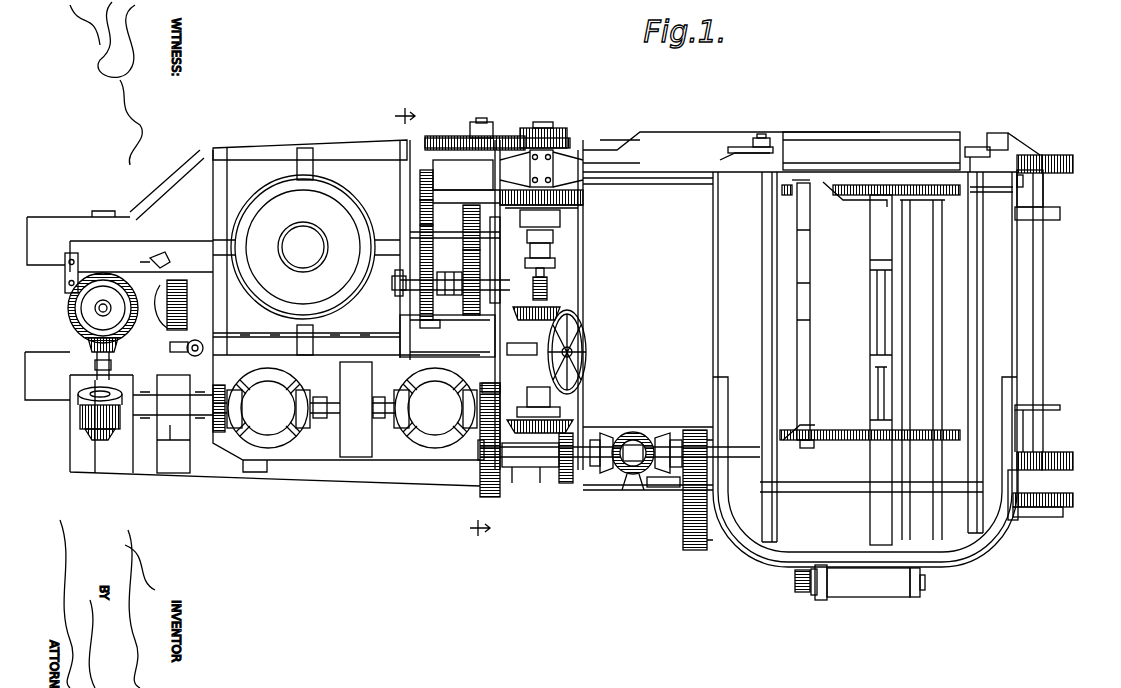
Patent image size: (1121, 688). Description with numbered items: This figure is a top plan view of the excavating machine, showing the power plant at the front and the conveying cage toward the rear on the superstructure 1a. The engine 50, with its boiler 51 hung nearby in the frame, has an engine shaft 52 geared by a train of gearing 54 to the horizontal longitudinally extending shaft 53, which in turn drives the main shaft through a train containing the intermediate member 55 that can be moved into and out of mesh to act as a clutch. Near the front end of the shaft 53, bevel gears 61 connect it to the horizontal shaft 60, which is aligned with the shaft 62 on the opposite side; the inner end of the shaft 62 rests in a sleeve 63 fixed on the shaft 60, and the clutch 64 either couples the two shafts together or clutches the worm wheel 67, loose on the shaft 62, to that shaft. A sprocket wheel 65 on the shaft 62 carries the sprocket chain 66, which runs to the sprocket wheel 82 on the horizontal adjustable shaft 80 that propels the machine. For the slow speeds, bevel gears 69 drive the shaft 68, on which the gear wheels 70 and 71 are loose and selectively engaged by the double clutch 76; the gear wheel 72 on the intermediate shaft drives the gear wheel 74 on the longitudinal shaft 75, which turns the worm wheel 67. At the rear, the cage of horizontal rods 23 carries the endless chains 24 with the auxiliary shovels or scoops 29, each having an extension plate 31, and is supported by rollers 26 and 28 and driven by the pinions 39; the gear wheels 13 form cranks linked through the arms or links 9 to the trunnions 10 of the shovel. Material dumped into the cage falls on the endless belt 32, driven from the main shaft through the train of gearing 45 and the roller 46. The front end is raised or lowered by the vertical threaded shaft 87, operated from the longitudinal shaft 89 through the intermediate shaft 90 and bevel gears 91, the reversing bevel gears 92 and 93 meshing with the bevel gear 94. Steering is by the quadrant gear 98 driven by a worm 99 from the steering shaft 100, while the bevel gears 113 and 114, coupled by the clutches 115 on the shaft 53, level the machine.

The superstructure 1a is at (713, 286).
The arms or links 9 is at (430, 328).
The trunnions 10 is at (433, 268).
The gear wheels 13 is at (463, 226).
The horizontal rods 23 is at (935, 264).
The endless chains 24 is at (855, 183).
The rollers 26 is at (740, 148).
The roller 28 is at (983, 146).
The auxiliary shovels or scoops 29 is at (837, 362).
The extension plate 31 is at (1073, 500).
The endless belt 32 is at (860, 590).
The pinions 39 is at (1035, 154).
The train of gearing 45 is at (793, 575).
The roller 46 is at (814, 596).
The engine 50 is at (345, 409).
The boiler 51 is at (306, 251).
The engine shaft 52 is at (508, 420).
The horizontal longitudinally extending shaft 53 is at (478, 452).
The train of gearing 54 is at (486, 383).
The intermediate member 55 is at (688, 486).
The horizontal shaft 60 is at (550, 292).
The bevel gears 61 is at (552, 423).
The shaft 62 is at (548, 289).
The sleeve 63 is at (545, 282).
The clutch 64 is at (556, 252).
The sprocket wheel 65 is at (565, 130).
The sprocket chain 66 is at (510, 135).
The worm wheel 67 is at (585, 176).
The shaft 68 is at (392, 288).
The bevel gears 69 is at (505, 318).
The gear wheel 70 is at (455, 273).
The gear wheel 71 is at (480, 292).
The gear wheel 72 is at (433, 212).
The gear wheel 74 is at (433, 182).
The longitudinal shaft 75 is at (458, 200).
The double clutch 76 is at (440, 300).
The horizontal adjustable shaft 80 is at (483, 120).
The sprocket wheel 82 is at (449, 137).
The vertical threaded shaft 87 is at (95, 310).
The longitudinal shaft 89 is at (173, 436).
The intermediate shaft 90 is at (110, 378).
The bevel gears 91 is at (118, 345).
The bevel gear 92 is at (95, 397).
The bevel gear 93 is at (82, 432).
The bevel gear 94 is at (160, 402).
The quadrant gear 98 is at (150, 266).
The worm 99 is at (187, 283).
The steering shaft 100 is at (203, 346).
The bevel gear 113 is at (604, 438).
The bevel gear 114 is at (658, 440).
The clutches 115 is at (680, 440).